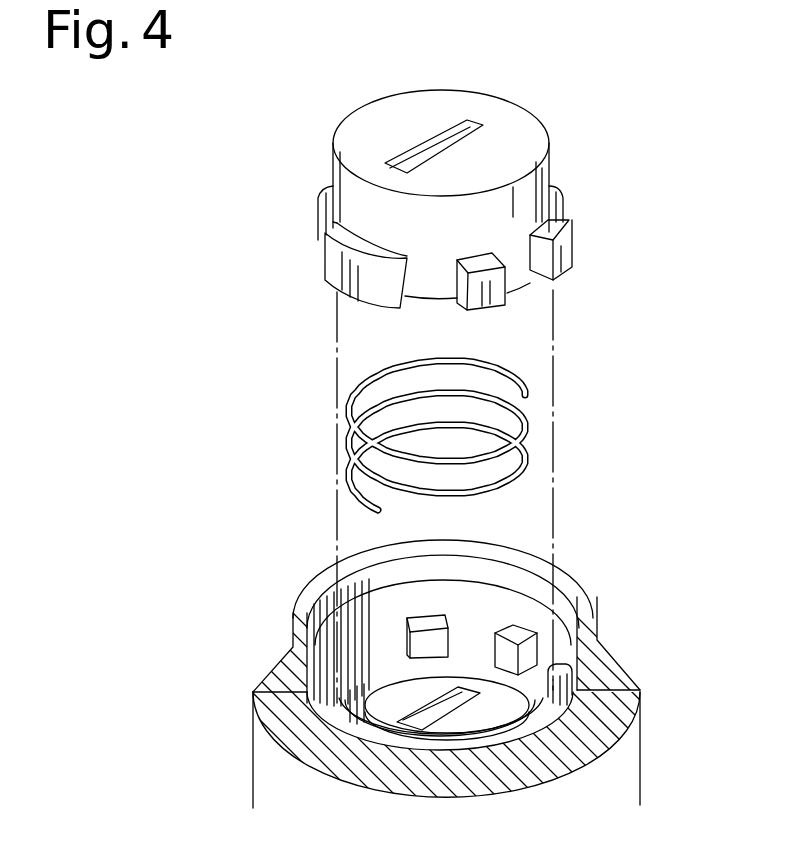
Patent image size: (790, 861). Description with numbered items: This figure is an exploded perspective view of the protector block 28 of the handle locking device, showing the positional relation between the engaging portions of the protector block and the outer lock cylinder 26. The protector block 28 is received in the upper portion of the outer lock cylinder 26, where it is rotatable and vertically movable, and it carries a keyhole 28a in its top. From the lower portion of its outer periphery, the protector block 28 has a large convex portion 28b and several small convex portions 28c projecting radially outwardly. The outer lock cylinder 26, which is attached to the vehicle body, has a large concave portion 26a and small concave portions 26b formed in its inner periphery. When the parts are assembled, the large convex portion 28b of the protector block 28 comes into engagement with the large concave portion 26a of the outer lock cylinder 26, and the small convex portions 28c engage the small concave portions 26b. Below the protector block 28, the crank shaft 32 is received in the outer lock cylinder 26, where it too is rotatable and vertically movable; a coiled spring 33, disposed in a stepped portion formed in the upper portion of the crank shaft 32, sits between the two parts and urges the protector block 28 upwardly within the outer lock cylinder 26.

The outer lock cylinder 26 is at (425, 696).
The large concave portion 26a is at (370, 642).
The small concave portions 26b is at (478, 636).
The protector block 28 is at (437, 189).
The keyhole 28a is at (440, 148).
The large convex portion 28b is at (325, 268).
The small convex portions 28c is at (318, 212).
The crank shaft 32 is at (503, 720).
The coiled spring 33 is at (527, 425).